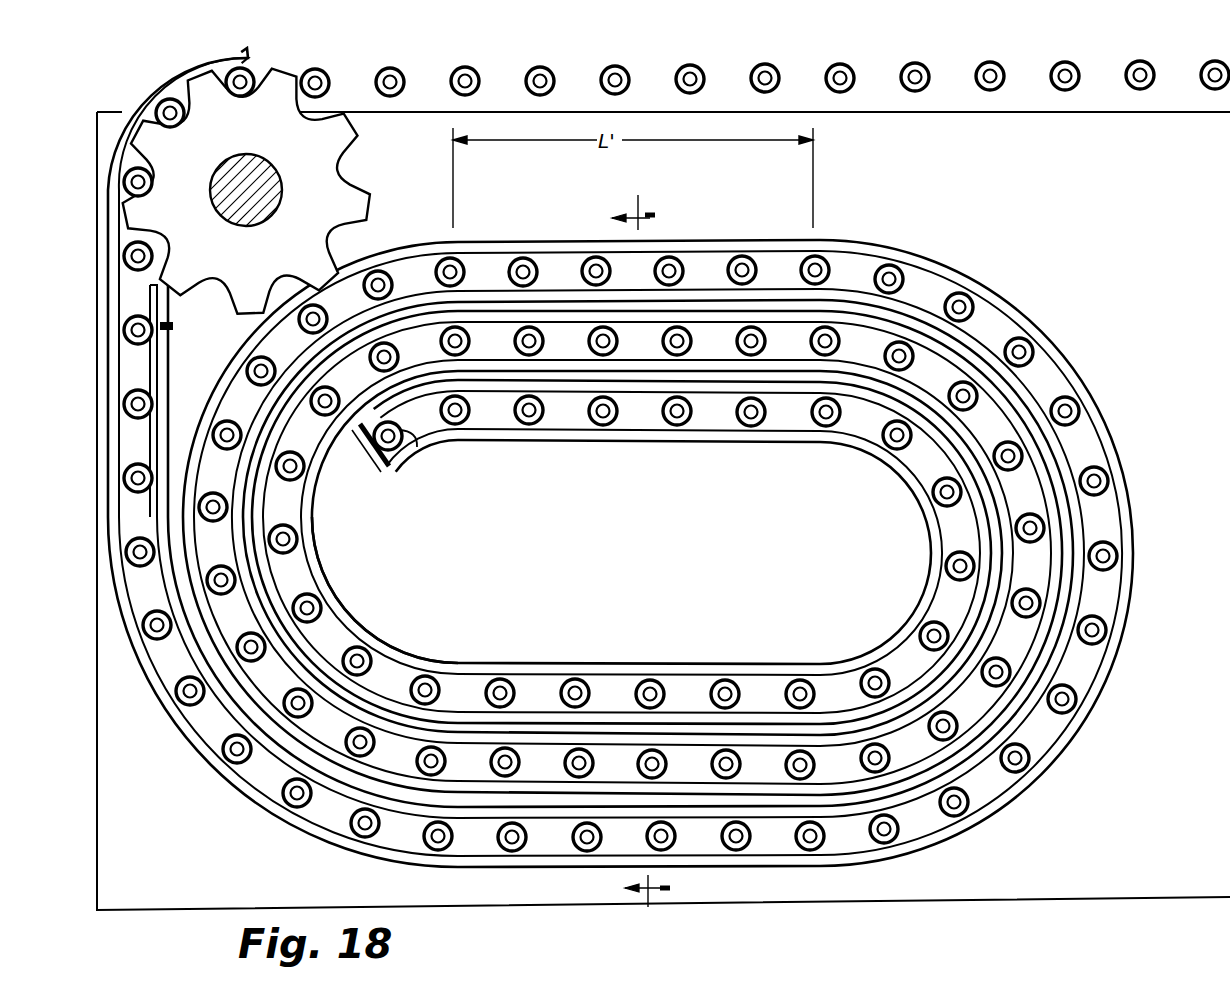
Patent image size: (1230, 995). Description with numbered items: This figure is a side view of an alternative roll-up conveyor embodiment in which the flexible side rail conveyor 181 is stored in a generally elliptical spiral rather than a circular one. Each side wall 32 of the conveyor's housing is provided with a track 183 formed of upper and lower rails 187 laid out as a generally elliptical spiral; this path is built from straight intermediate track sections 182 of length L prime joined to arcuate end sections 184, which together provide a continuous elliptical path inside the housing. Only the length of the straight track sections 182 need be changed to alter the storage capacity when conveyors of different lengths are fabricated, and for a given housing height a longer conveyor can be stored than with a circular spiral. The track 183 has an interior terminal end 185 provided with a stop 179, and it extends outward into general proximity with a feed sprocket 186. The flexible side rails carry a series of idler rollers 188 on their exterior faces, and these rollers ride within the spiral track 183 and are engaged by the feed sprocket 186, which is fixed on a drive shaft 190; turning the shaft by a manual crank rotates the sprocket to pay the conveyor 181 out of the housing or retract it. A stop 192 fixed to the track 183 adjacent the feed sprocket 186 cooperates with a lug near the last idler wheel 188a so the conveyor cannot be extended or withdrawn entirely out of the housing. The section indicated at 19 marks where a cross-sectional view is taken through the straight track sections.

The side wall 32 is at (663, 511).
The stop 179 is at (369, 450).
The flexible side rail conveyor 181 is at (297, 569).
The straight track section 182 is at (658, 451).
The track 183 is at (1041, 316).
The arcuate end section 184 is at (1135, 494).
The interior terminal end 185 is at (405, 471).
The feed sprocket 186 is at (338, 198).
The upper and lower rails 187 is at (642, 421).
The idler roller 188 is at (462, 69).
The last idler wheel 188a is at (414, 443).
The drive shaft 190 is at (273, 148).
The stop 192 is at (174, 327).
The section line 19- 19 is at (655, 545).